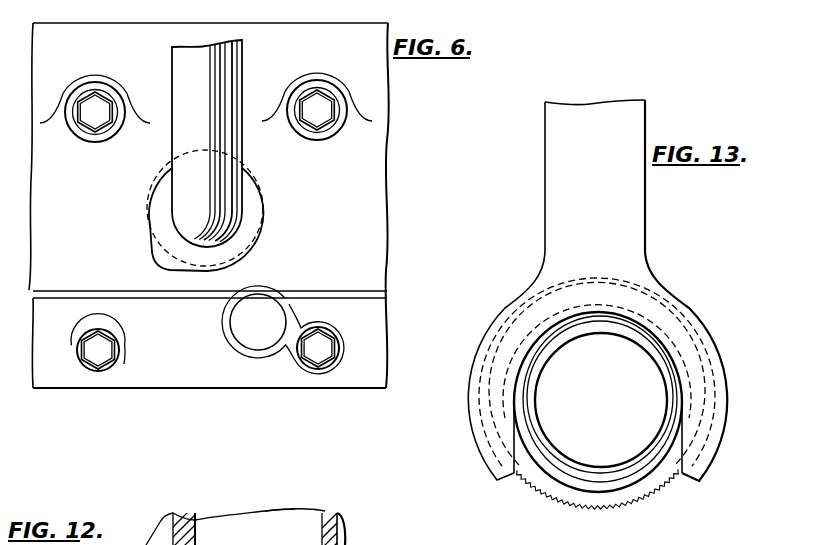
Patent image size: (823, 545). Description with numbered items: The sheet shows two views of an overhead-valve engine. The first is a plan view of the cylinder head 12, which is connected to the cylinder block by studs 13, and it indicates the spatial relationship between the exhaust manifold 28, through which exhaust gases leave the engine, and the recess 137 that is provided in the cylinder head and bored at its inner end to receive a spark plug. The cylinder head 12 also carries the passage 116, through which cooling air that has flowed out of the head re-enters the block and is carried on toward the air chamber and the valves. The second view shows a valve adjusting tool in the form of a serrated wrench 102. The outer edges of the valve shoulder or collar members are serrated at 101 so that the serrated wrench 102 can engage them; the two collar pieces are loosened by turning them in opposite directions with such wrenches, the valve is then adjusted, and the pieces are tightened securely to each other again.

In FIG. 6, the exhaust manifold 28 is at (185, 100).
In FIG. 6, the studs 13 is at (107, 352).
In FIG. 6, the recess 137 is at (259, 329).
In FIG. 13, the serrated wrench 102 is at (705, 338).
In FIG. 13, the serrations 101 is at (612, 500).
In FIG. 12, the passage 116 is at (288, 544).
In FIG. 12, the cylinder head 12 is at (350, 544).